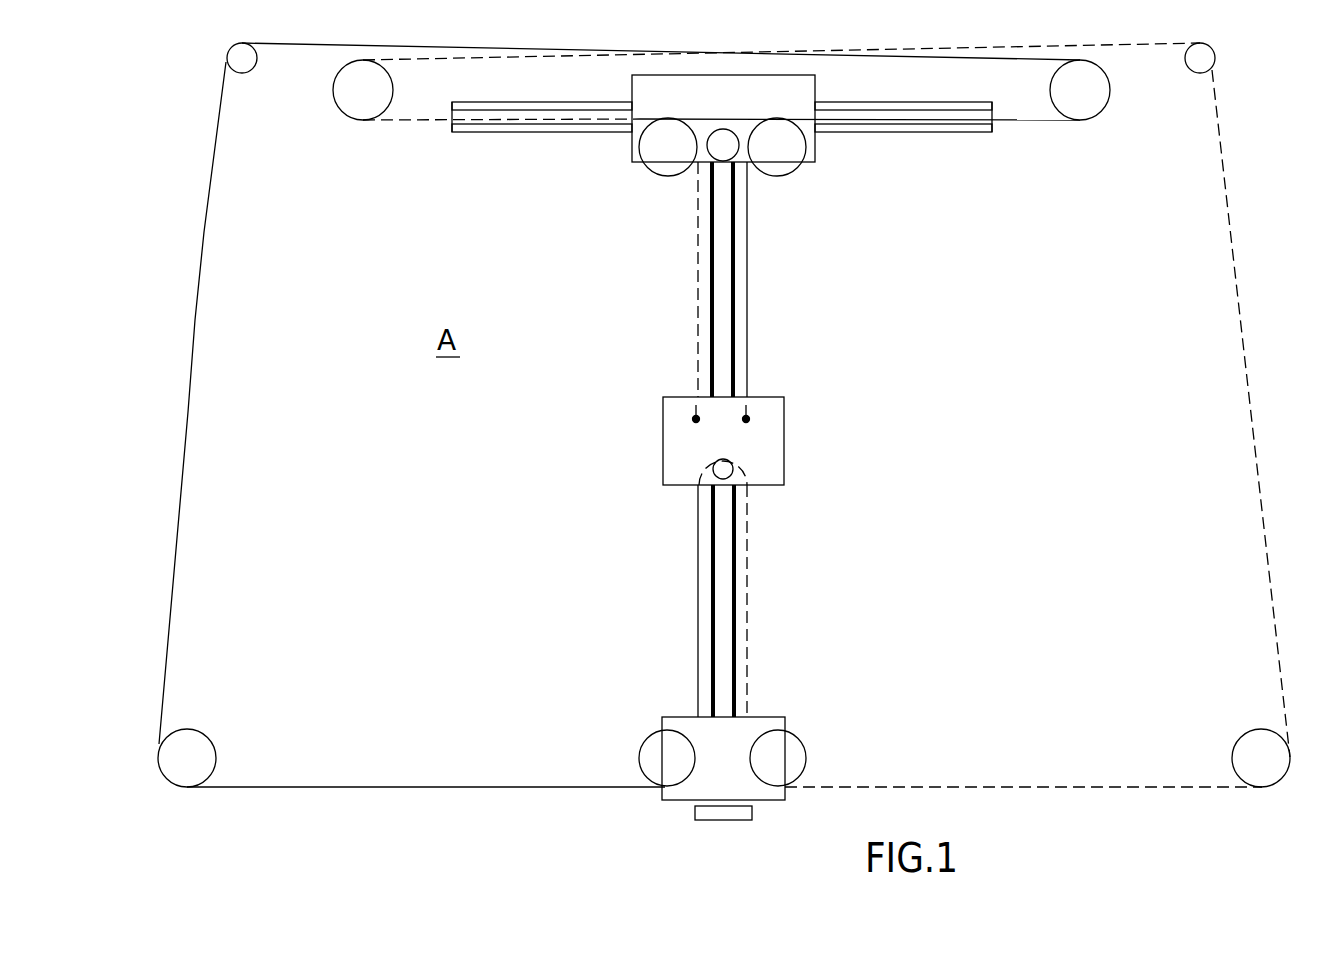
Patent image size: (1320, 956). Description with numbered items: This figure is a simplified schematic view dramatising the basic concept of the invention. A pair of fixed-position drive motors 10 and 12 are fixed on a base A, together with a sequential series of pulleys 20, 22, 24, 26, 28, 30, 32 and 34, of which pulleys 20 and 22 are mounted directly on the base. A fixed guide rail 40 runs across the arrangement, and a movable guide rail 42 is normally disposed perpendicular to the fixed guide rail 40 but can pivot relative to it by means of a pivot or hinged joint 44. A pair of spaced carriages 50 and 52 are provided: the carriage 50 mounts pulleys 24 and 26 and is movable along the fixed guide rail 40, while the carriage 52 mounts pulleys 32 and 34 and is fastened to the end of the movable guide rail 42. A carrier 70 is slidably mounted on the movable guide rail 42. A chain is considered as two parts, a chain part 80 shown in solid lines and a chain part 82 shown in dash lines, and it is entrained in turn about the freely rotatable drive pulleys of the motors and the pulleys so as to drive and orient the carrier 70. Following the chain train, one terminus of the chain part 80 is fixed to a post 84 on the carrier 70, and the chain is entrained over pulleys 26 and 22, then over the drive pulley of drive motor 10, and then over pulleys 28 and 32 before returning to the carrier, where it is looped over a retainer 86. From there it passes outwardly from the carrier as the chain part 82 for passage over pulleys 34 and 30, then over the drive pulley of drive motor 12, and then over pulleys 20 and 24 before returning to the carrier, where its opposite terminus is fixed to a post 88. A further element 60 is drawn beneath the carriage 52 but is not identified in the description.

The drive motor 10 is at (228, 62).
The drive motor 12 is at (1213, 62).
The pulley 20 is at (346, 100).
The pulley 22 is at (1090, 113).
The pulley 24 is at (670, 170).
The pulley 26 is at (785, 168).
The pulley 28 is at (168, 760).
The pulley 30 is at (1258, 778).
The pulley 32 is at (665, 785).
The pulley 34 is at (786, 777).
The fixed guide rail 40 is at (490, 134).
The movable guide rail 42 is at (740, 256).
The pivot or hinged joint 44 is at (728, 135).
The carriage 50 is at (815, 86).
The carriage 52 is at (684, 800).
The motor 60 is at (724, 818).
The carrier 70 is at (737, 443).
The chain part 80 is at (195, 372).
The chain part 82 is at (698, 285).
The post 84 is at (746, 419).
The retainer 86 is at (728, 469).
The post 88 is at (696, 419).